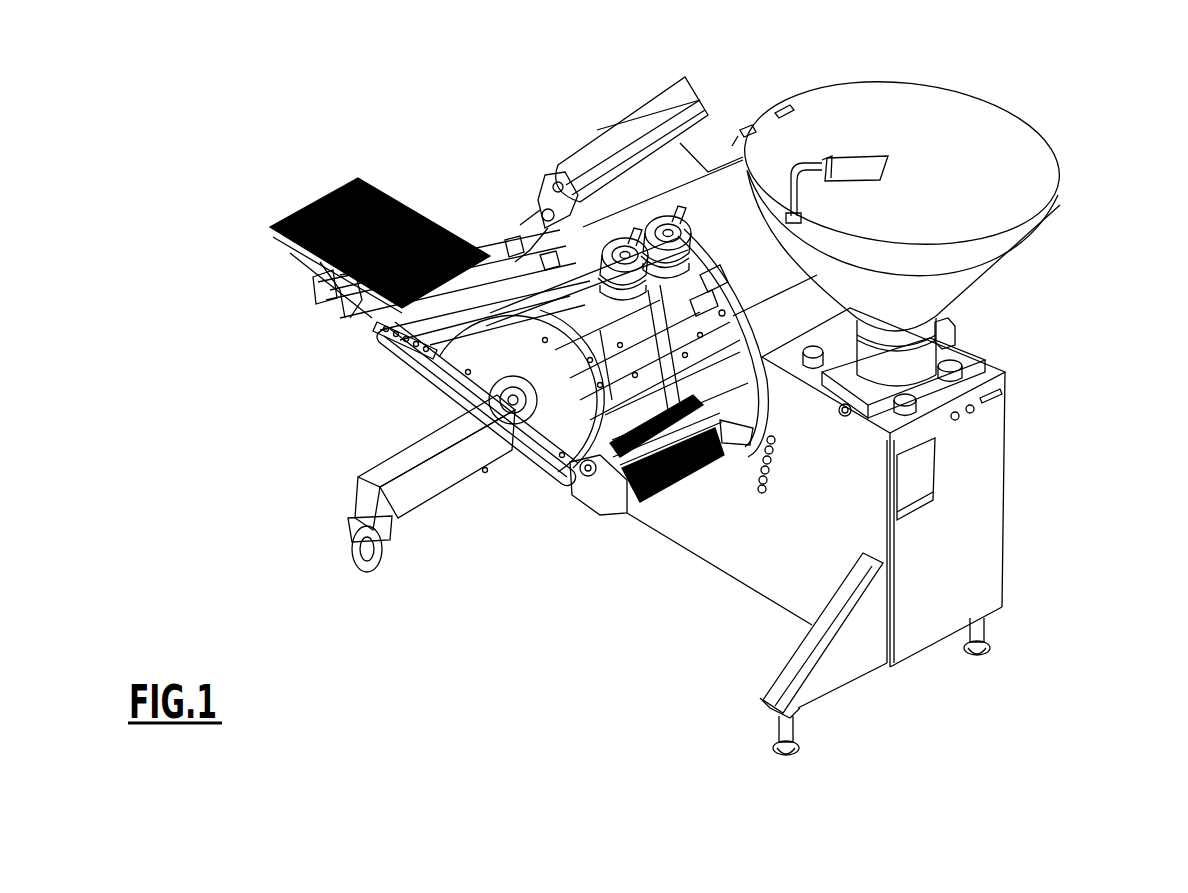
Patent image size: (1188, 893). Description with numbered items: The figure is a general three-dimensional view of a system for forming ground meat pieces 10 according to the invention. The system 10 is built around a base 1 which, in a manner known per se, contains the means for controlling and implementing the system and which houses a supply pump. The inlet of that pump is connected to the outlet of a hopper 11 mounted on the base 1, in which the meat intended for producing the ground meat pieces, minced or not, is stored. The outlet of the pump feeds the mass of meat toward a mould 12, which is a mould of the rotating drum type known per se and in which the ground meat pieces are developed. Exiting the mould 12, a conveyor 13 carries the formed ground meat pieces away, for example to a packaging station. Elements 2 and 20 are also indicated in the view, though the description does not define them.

The base 1 is at (972, 490).
The connection 2 is at (845, 418).
The system for forming ground meat pieces 10 is at (420, 117).
The hopper 11 is at (990, 143).
The mould 12 is at (463, 367).
The conveyor 13 is at (315, 202).
The forming rollers 20 is at (625, 240).